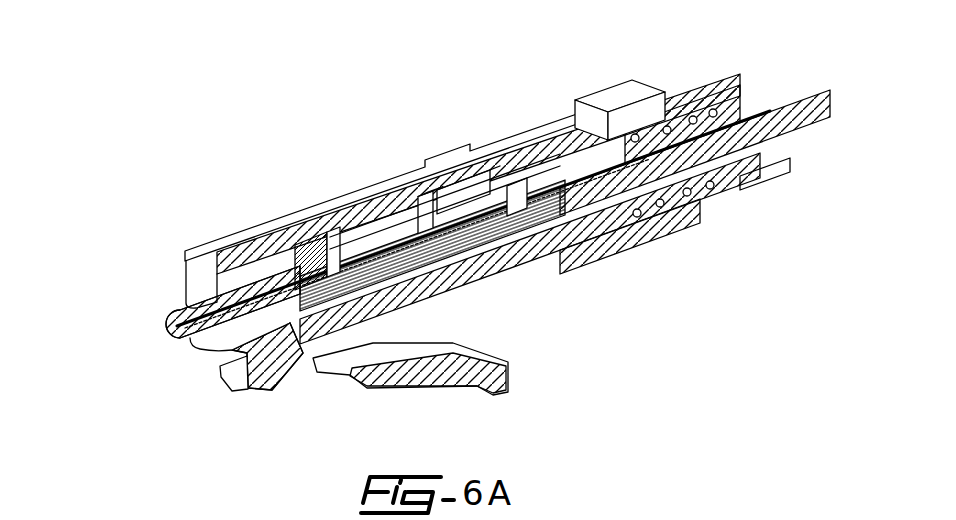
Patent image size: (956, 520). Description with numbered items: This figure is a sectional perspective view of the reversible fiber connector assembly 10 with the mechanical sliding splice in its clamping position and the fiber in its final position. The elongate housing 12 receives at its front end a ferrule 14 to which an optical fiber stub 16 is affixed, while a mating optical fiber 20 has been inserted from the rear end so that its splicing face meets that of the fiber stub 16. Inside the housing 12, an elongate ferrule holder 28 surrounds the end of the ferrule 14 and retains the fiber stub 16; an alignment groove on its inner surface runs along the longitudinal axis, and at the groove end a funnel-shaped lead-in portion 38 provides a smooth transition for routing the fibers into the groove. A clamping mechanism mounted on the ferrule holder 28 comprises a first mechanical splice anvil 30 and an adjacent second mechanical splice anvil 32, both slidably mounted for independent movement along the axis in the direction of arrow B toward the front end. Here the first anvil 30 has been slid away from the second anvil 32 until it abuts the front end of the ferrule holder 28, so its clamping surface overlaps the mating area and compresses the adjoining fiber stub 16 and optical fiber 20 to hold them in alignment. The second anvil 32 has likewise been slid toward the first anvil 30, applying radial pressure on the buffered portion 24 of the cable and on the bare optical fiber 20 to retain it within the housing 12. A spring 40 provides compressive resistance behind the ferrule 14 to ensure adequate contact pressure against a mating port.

The reversible fiber connector assembly 10 is at (150, 190).
The housing 12 is at (215, 250).
The ferrule 14 is at (186, 302).
The optical fiber stub 16 is at (178, 328).
The mating optical fiber 20 is at (563, 226).
The buffered portion 24 is at (766, 140).
The ferrule holder 28 is at (506, 246).
The first mechanical splice anvil 30 is at (306, 412).
The second mechanical splice anvil 32 is at (554, 180).
The funnel-shaped lead-in portion 38 is at (364, 387).
The spring 40 is at (683, 174).